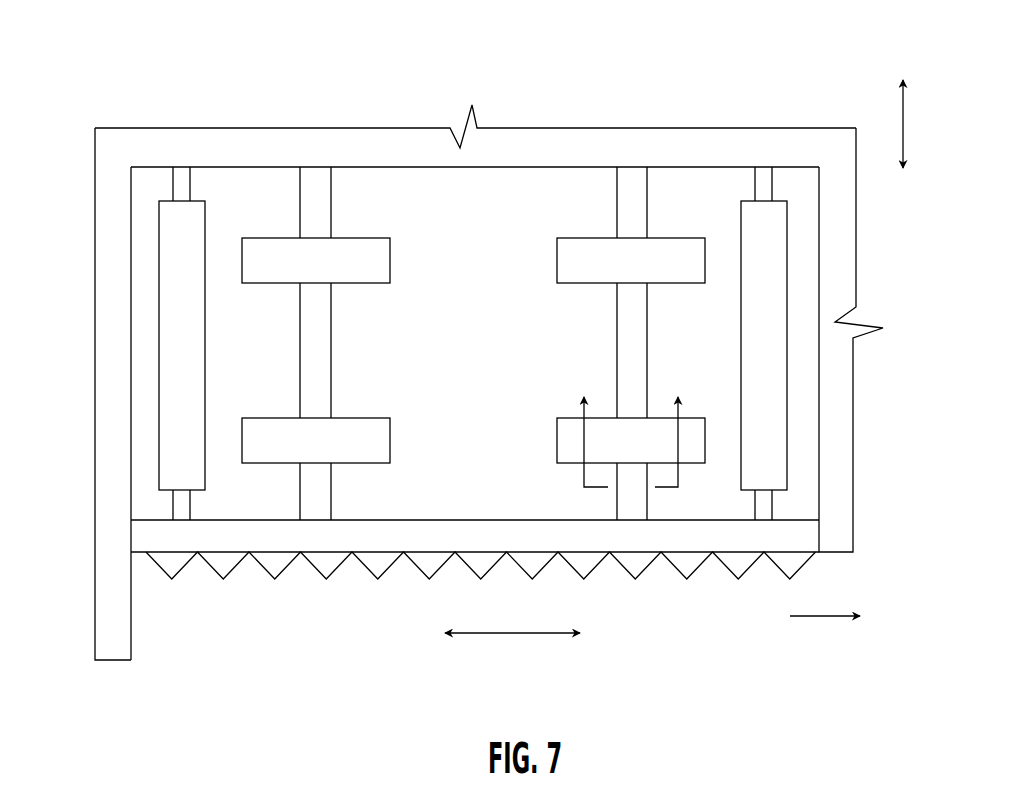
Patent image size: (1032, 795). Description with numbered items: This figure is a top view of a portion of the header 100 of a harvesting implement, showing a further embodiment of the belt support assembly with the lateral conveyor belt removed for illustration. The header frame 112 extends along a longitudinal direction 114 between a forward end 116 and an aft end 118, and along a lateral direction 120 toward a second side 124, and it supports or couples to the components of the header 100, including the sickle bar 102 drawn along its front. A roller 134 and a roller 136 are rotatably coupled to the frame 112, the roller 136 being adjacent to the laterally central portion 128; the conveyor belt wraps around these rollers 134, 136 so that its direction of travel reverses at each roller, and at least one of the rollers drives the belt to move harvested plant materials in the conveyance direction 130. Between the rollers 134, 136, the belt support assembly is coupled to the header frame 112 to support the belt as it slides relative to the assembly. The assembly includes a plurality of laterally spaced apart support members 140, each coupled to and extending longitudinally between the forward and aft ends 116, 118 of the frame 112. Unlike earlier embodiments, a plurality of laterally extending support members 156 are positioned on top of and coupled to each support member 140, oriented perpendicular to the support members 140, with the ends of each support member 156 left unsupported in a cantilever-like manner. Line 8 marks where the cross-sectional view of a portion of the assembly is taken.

The header 100 is at (121, 53).
The sickle bar 102 is at (430, 560).
The header frame 112 is at (768, 143).
The longitudinal direction 114 is at (902, 110).
The forward end 116 is at (239, 657).
The aft end 118 is at (231, 76).
The lateral direction 120 is at (522, 634).
The second side 124 is at (66, 264).
The laterally central portion 128 is at (882, 526).
The conveyance direction 130 is at (817, 617).
The roller 134 is at (174, 427).
The roller 136 is at (768, 405).
The support member 140 is at (617, 207).
The laterally extending support member 156 is at (390, 268).
The line 8- 8 is at (630, 423).